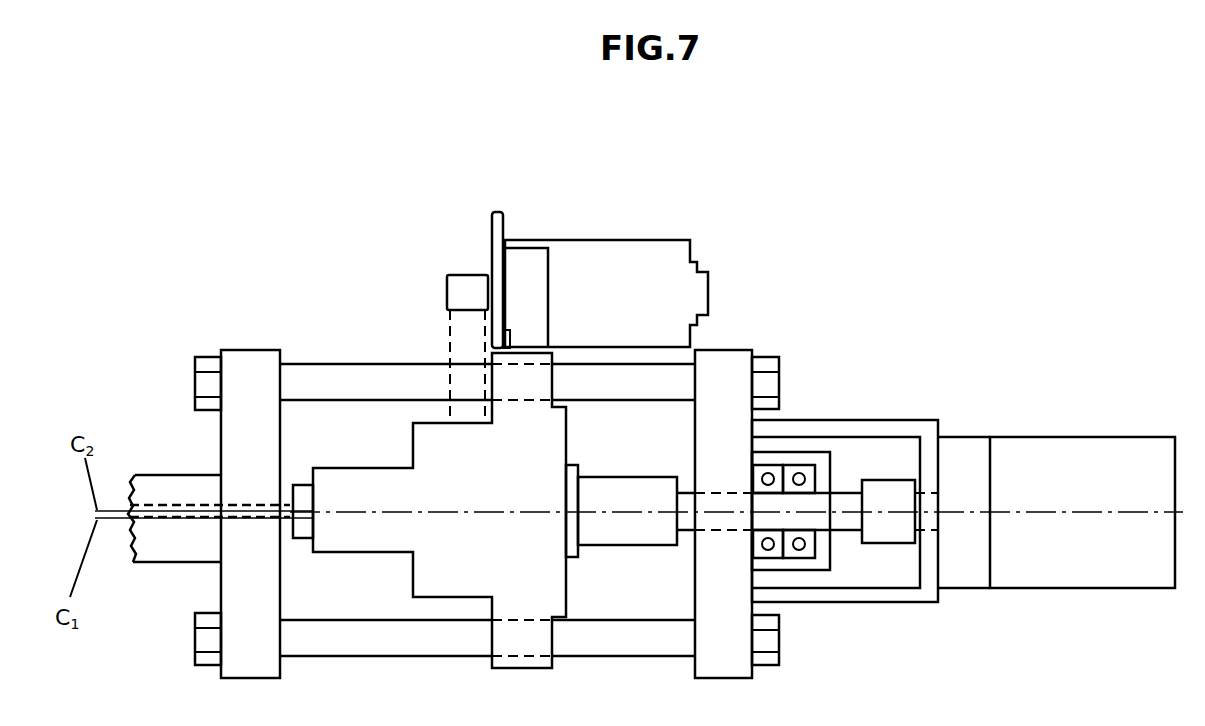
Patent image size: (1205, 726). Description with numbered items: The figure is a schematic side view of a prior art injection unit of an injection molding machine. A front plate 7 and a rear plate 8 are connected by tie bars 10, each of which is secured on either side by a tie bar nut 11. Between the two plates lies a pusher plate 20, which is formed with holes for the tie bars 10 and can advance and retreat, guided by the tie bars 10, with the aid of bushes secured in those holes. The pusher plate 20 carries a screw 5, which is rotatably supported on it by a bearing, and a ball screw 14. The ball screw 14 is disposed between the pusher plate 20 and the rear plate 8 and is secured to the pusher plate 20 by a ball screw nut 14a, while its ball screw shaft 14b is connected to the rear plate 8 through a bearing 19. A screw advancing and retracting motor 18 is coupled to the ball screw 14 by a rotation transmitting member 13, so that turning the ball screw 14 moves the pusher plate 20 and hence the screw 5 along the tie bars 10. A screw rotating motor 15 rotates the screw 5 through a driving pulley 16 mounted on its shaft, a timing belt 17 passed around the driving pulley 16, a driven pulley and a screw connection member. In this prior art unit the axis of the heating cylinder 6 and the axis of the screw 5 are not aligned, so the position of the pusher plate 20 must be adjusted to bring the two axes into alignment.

The screw 5 is at (170, 505).
The heating cylinder 6 is at (180, 563).
The front plate 7 is at (237, 348).
The rear plate 8 is at (723, 348).
The tie bars 10 is at (370, 378).
The tie bar nut 11 is at (197, 357).
The rotation transmitting member 13 is at (882, 480).
The ball screw 14 is at (600, 547).
The ball screw nut 14a is at (643, 547).
The ball screw shaft 14b is at (843, 532).
The screw rotating motor 15 is at (608, 240).
The driving pulley 16 is at (468, 275).
The timing belt 17 is at (450, 333).
The screw advancing and retracting motor 18 is at (1053, 437).
The bearing 19 is at (800, 478).
The pusher plate 20 is at (347, 468).